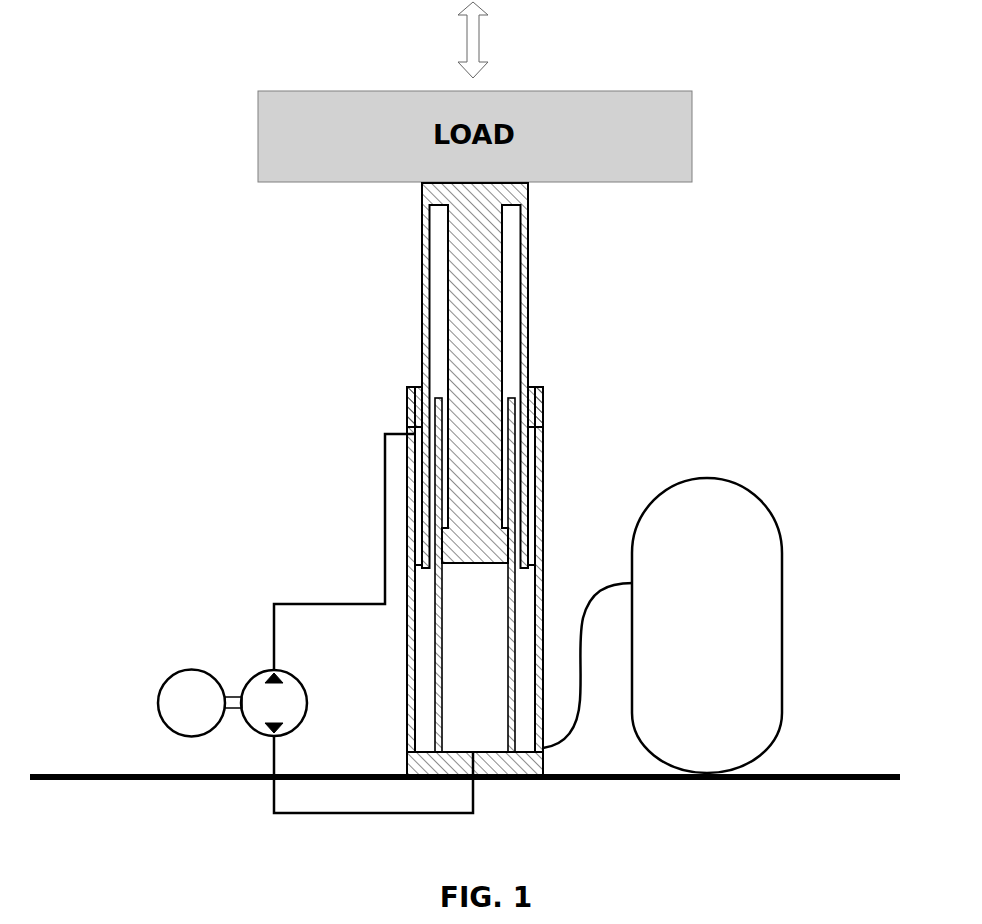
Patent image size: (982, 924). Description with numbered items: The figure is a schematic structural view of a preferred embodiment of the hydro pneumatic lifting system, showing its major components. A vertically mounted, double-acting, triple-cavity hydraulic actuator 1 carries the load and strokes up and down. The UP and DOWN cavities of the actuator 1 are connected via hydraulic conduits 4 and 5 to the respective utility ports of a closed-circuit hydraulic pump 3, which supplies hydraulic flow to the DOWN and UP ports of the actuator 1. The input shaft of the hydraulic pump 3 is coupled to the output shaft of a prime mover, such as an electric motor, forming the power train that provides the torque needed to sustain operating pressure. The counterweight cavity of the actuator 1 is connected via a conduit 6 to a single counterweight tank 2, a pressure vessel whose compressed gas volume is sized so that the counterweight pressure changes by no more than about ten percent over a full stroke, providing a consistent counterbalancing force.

The hydraulic actuator 1 is at (543, 458).
The pressure vessel 2 is at (707, 493).
The hydraulic pump 3 is at (260, 688).
The hydraulic conduit 4 is at (384, 480).
The hydraulic conduit 5 is at (384, 813).
The conduit 6 is at (608, 580).